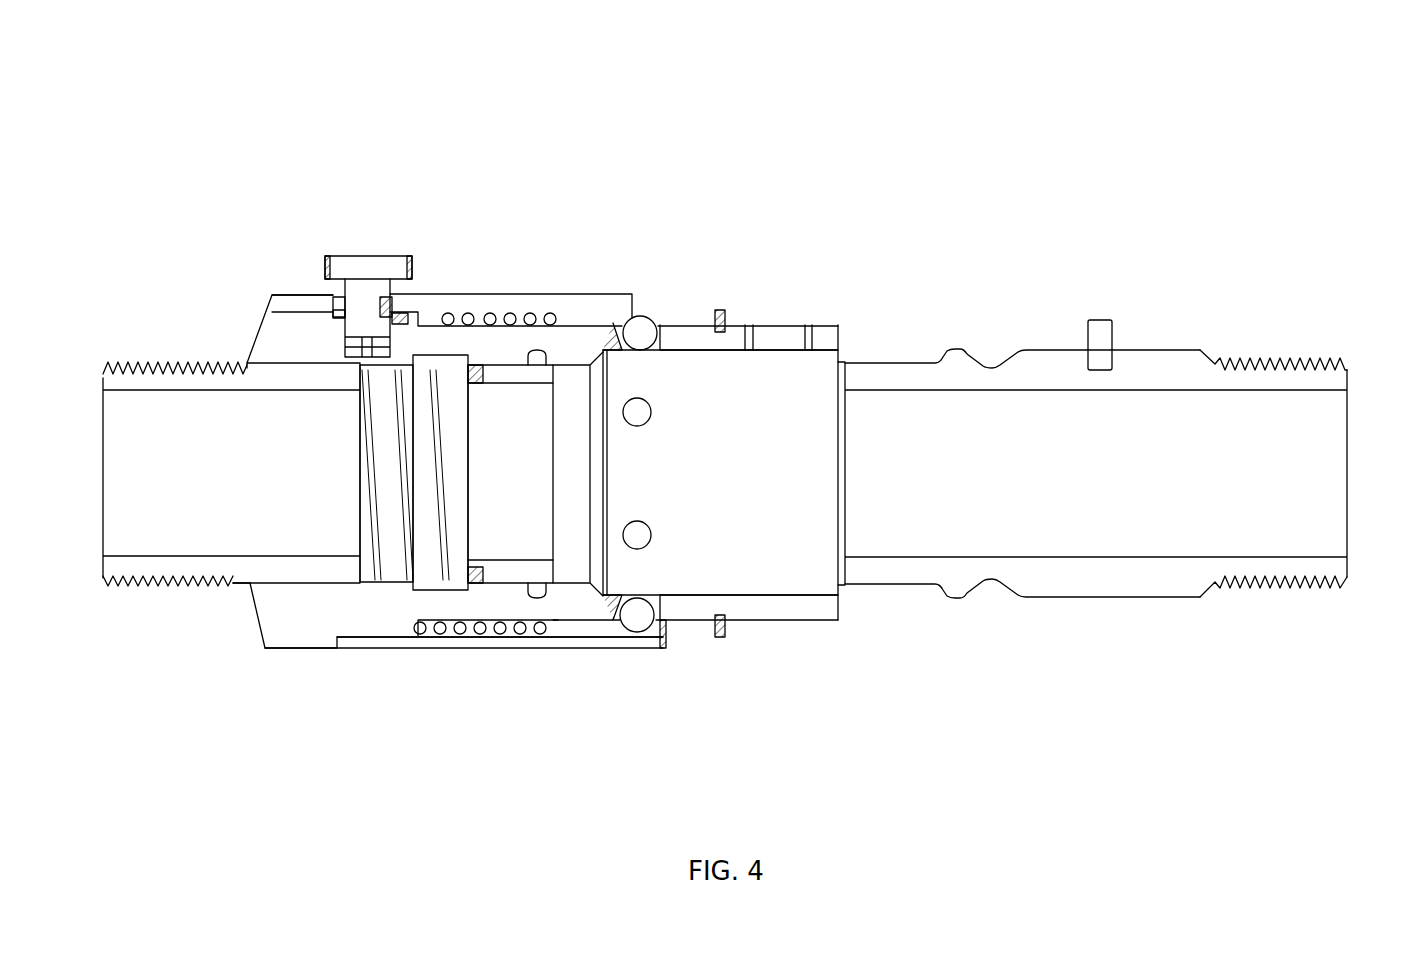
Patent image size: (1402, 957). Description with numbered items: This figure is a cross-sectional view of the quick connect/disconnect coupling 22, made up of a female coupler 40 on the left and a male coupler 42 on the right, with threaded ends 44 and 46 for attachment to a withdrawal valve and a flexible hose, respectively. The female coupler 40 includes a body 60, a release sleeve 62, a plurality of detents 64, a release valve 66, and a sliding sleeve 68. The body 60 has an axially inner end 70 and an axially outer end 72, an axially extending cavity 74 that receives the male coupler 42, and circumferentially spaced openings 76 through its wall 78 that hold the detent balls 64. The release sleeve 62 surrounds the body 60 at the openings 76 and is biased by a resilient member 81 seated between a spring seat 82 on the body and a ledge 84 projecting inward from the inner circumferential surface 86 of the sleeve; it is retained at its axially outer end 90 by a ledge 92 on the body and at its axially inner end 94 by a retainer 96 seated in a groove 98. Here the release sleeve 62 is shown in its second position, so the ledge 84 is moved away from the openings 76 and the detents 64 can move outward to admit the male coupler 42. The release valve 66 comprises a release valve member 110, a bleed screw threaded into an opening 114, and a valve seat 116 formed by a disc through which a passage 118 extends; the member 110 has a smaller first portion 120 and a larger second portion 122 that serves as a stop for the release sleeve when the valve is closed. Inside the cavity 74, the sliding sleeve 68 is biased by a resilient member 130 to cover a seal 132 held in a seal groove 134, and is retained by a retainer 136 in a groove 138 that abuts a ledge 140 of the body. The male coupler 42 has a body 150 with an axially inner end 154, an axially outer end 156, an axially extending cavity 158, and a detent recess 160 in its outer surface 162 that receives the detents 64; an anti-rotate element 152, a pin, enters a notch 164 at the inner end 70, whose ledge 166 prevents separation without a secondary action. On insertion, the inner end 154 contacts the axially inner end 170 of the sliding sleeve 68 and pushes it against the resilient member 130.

The quick connect/disconnect coupling 22 is at (1007, 115).
The female coupler 40 is at (216, 283).
The male coupler 42 is at (1127, 647).
The threaded end 44 is at (142, 586).
The threaded end 46 is at (1256, 355).
The body 60 is at (371, 628).
The release sleeve 62 is at (600, 345).
The detents 64 is at (641, 331).
The release valve 66 is at (368, 238).
The sliding sleeve 68 is at (510, 574).
The axially inner end 70 is at (837, 622).
The axially outer end 72 is at (104, 377).
The axially extending cavity 74 is at (721, 489).
The circumferentially spaced openings 76 is at (640, 540).
The wall 78 is at (669, 326).
The resilient member 81 is at (532, 313).
The spring seat 82 is at (420, 320).
The ledge 84 is at (560, 323).
The inner circumferential surface 86 is at (478, 316).
The axially outer end 90 is at (336, 312).
The ledge 92 is at (340, 645).
The axially inner end 94 is at (664, 630).
The retainer 96 is at (723, 315).
The groove 98 is at (716, 620).
The release valve member 110 is at (332, 255).
The opening 114 is at (337, 310).
The valve seat 116 is at (347, 350).
The passage 118 is at (357, 360).
The first portion 120 is at (397, 313).
The second portion 122 is at (386, 305).
The resilient member 130 is at (445, 578).
The seal 132 is at (538, 598).
The seal groove 134 is at (547, 584).
The retainer 136 is at (482, 572).
The groove 138 is at (473, 568).
The ledge 140 is at (478, 368).
The body 150 is at (1108, 598).
The anti-rotate element 152 is at (1097, 322).
The axially inner end 154 is at (845, 586).
The axially outer end 156 is at (1340, 578).
The axially extending cavity 158 is at (1123, 489).
The detent recess 160 is at (984, 590).
The outer surface 162 is at (1030, 352).
The notch 164 is at (770, 340).
The ledge 166 is at (812, 330).
The axially inner end 170 is at (554, 378).